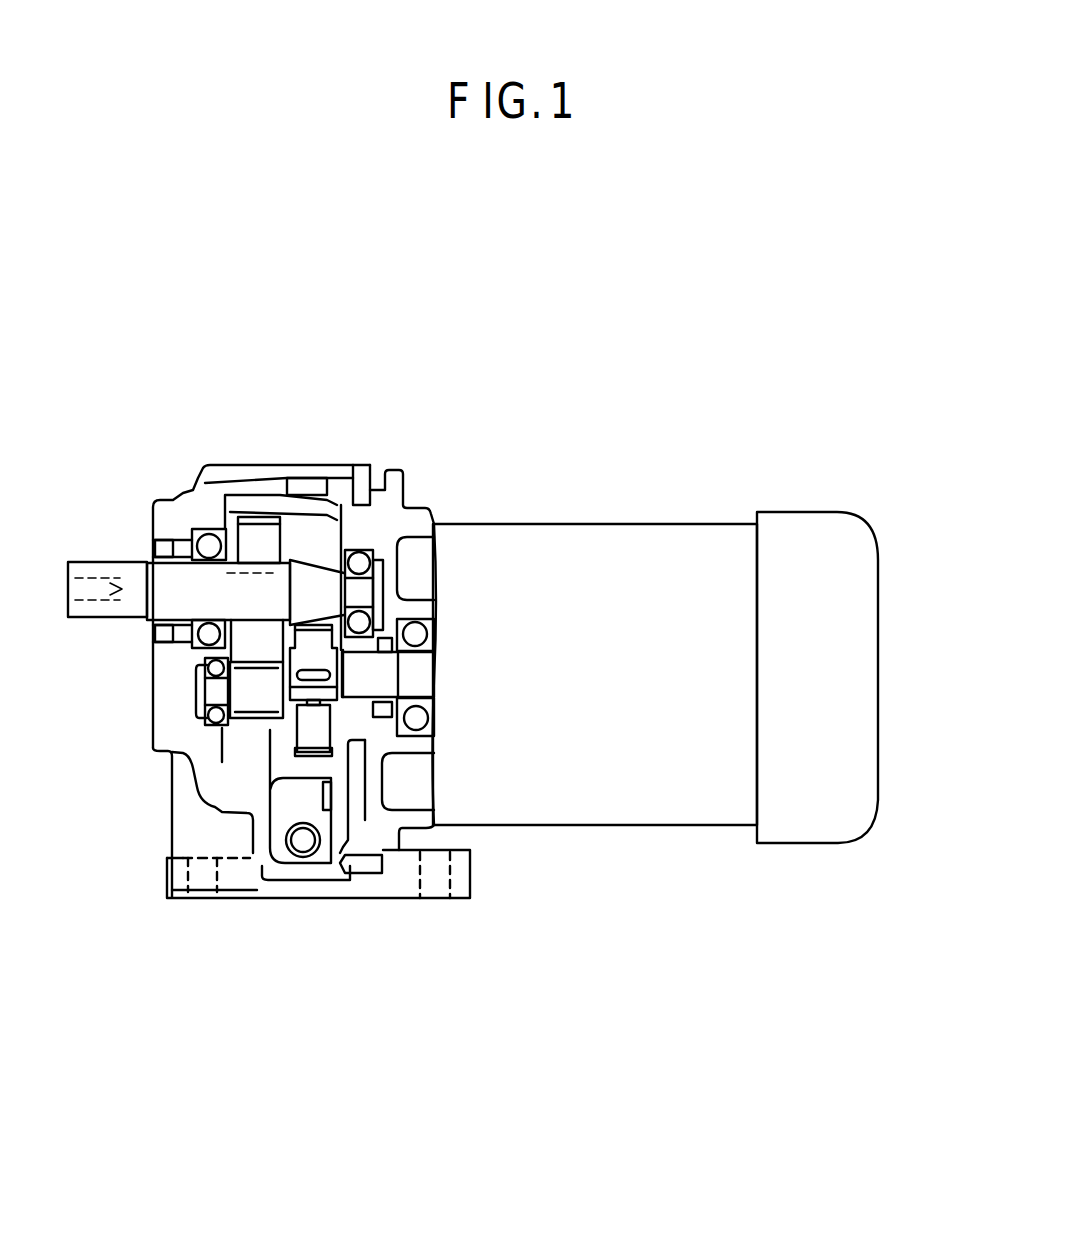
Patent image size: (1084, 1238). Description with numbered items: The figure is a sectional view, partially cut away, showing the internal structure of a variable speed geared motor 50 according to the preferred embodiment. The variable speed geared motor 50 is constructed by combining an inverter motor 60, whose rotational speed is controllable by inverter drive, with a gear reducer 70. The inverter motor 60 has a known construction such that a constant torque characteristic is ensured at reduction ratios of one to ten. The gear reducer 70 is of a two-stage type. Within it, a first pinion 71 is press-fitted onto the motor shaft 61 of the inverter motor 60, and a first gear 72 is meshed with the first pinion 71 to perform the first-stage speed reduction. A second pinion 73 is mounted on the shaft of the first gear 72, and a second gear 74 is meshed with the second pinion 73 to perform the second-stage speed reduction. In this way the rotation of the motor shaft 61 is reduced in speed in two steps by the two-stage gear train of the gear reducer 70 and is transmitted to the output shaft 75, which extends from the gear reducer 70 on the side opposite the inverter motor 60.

The variable speed geared motor 50 is at (418, 418).
The inverter motor 60 is at (543, 520).
The motor shaft 61 is at (380, 668).
The gear reducer 70 is at (230, 462).
The first pinion 71 is at (322, 733).
The first gear 72 is at (312, 730).
The second pinion 73 is at (252, 722).
The second gear 74 is at (247, 638).
The output shaft 75 is at (102, 608).